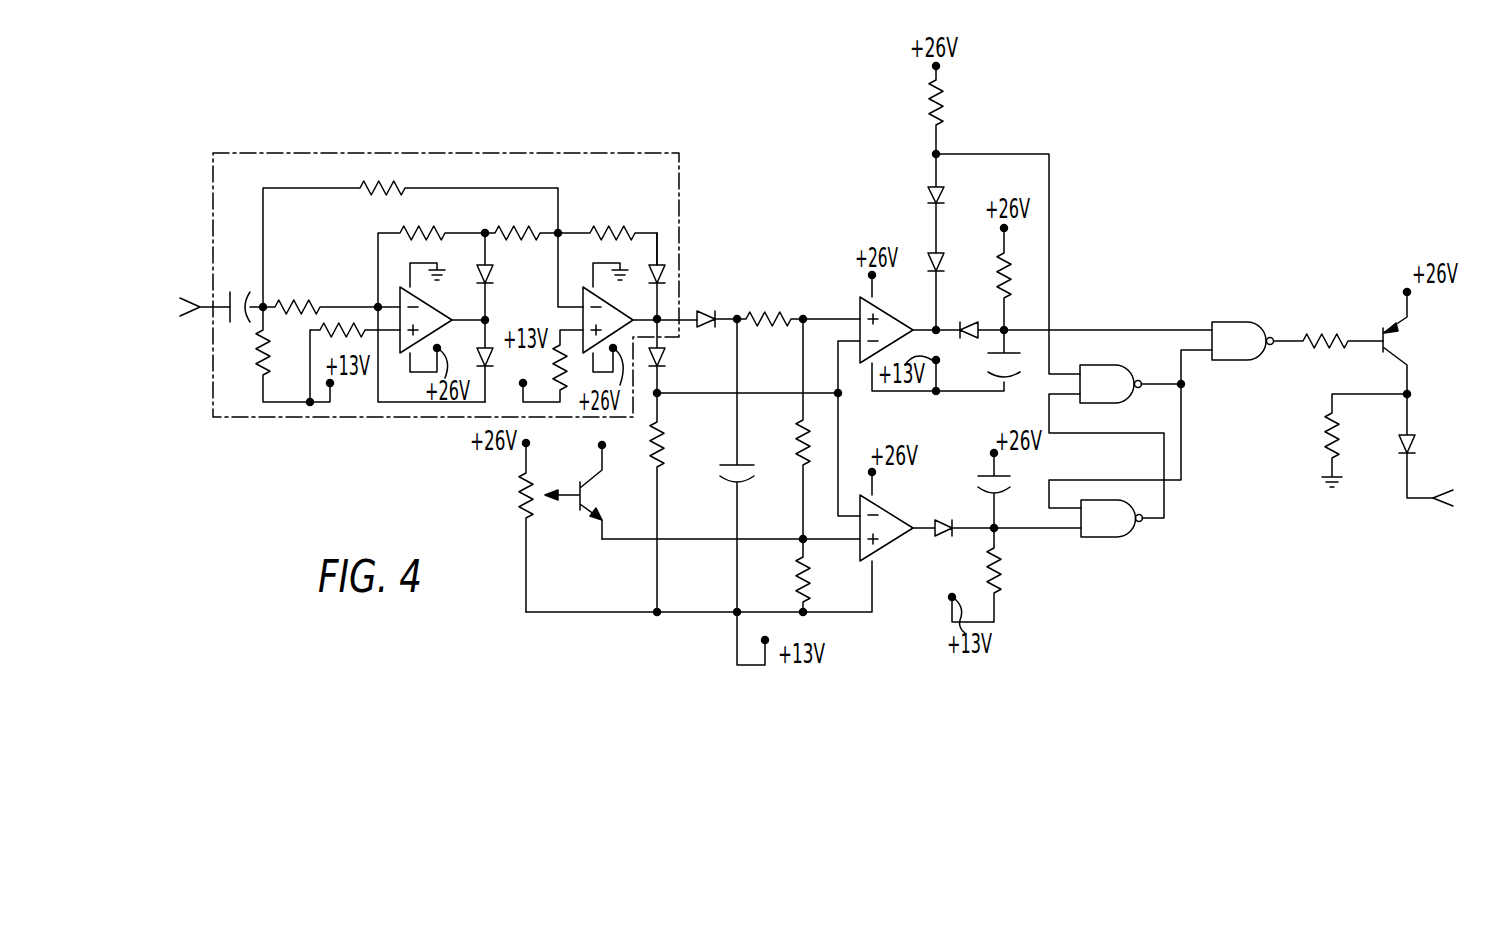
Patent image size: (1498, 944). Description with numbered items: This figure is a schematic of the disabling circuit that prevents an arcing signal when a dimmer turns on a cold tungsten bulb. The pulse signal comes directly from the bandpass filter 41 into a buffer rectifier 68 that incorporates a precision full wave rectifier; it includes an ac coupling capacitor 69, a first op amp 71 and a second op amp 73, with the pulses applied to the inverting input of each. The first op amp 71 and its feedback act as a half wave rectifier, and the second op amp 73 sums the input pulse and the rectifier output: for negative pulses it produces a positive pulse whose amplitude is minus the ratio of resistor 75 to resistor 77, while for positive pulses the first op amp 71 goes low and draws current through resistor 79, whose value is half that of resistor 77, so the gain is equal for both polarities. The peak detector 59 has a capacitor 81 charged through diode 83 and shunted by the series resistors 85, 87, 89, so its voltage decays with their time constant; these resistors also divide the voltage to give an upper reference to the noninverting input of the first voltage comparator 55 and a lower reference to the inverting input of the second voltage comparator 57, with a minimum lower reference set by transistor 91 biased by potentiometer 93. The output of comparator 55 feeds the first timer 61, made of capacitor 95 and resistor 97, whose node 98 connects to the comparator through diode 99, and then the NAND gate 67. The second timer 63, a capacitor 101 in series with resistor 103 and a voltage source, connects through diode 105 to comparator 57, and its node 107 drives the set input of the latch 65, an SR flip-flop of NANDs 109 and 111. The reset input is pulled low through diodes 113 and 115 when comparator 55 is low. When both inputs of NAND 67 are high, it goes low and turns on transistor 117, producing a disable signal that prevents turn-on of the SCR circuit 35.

The SCR circuit 35 is at (1460, 504).
The bandpass filter 41 is at (177, 300).
The first voltage comparator 55 is at (860, 300).
The second voltage comparator 57 is at (903, 542).
The peak detector 59 is at (731, 296).
The first timer 61 is at (1028, 297).
The second timer 63 is at (965, 560).
The latch 65 is at (1173, 495).
The NAND gate 67 is at (1230, 321).
The buffer rectifier 68 is at (588, 153).
The ac coupling capacitor 69 is at (238, 290).
The first op amp 71 is at (404, 294).
The second op amp 73 is at (583, 292).
The resistor 75 is at (612, 232).
The resistor 77 is at (368, 196).
The resistor 79 is at (512, 232).
The capacitor 81 is at (742, 464).
The diode 83 is at (699, 310).
The resistor 85 is at (772, 312).
The resistor 87 is at (812, 434).
The resistor 89 is at (800, 590).
The transistor 91 is at (590, 508).
The potentiometer 93 is at (520, 495).
The capacitor 95 is at (1012, 373).
The resistor 97 is at (998, 266).
The node 98 is at (1007, 326).
The diode 99 is at (968, 320).
The capacitor 101 is at (978, 475).
The resistor 103 is at (1002, 565).
The diode 105 is at (938, 516).
The node 107 is at (1000, 532).
The NAND 109 is at (1092, 364).
The NAND 111 is at (1110, 537).
The diode 113 is at (932, 184).
The diode 115 is at (932, 252).
The transistor 117 is at (1394, 322).